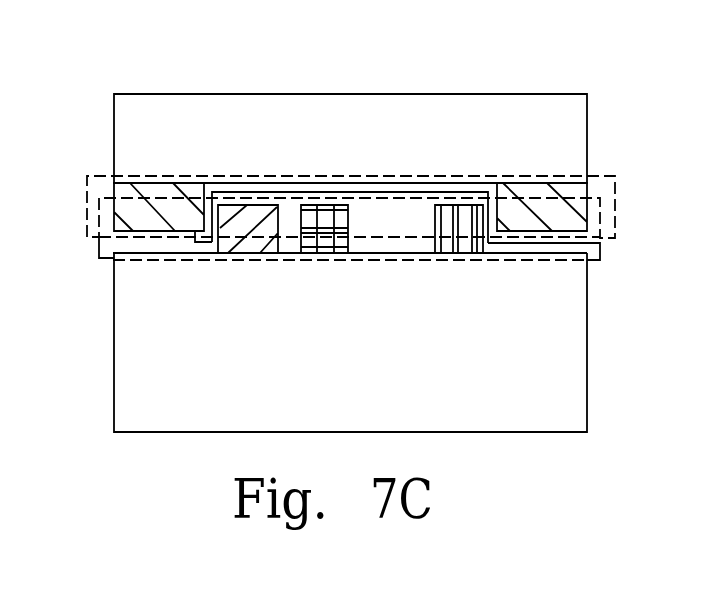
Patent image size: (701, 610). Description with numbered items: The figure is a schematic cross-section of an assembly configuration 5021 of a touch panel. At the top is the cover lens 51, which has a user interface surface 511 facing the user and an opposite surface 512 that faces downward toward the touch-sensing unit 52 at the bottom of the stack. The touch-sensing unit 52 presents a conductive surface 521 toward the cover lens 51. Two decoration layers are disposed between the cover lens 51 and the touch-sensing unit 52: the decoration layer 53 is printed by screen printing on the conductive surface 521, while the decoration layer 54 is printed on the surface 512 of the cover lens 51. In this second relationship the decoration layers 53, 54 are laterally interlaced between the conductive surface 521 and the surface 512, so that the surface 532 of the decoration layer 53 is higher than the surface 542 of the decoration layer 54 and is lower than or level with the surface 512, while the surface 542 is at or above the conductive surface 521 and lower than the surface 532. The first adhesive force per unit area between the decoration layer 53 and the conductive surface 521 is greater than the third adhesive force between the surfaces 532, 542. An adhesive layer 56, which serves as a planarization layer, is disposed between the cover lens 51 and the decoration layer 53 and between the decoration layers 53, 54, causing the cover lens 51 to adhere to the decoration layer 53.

The assembly configuration 5021 is at (580, 66).
The cover lens 51 is at (150, 139).
The user interface surface 511 is at (278, 94).
The surface of the cover lens 512 is at (333, 192).
The touch-sensing unit 52 is at (137, 405).
The conductive surface 521 is at (390, 253).
The decoration layer 53 is at (97, 252).
The surface of the decoration layer 532 is at (232, 203).
The decoration layer 54 is at (87, 228).
The surface of the decoration layer 542 is at (190, 233).
The adhesive layer 56 is at (530, 243).